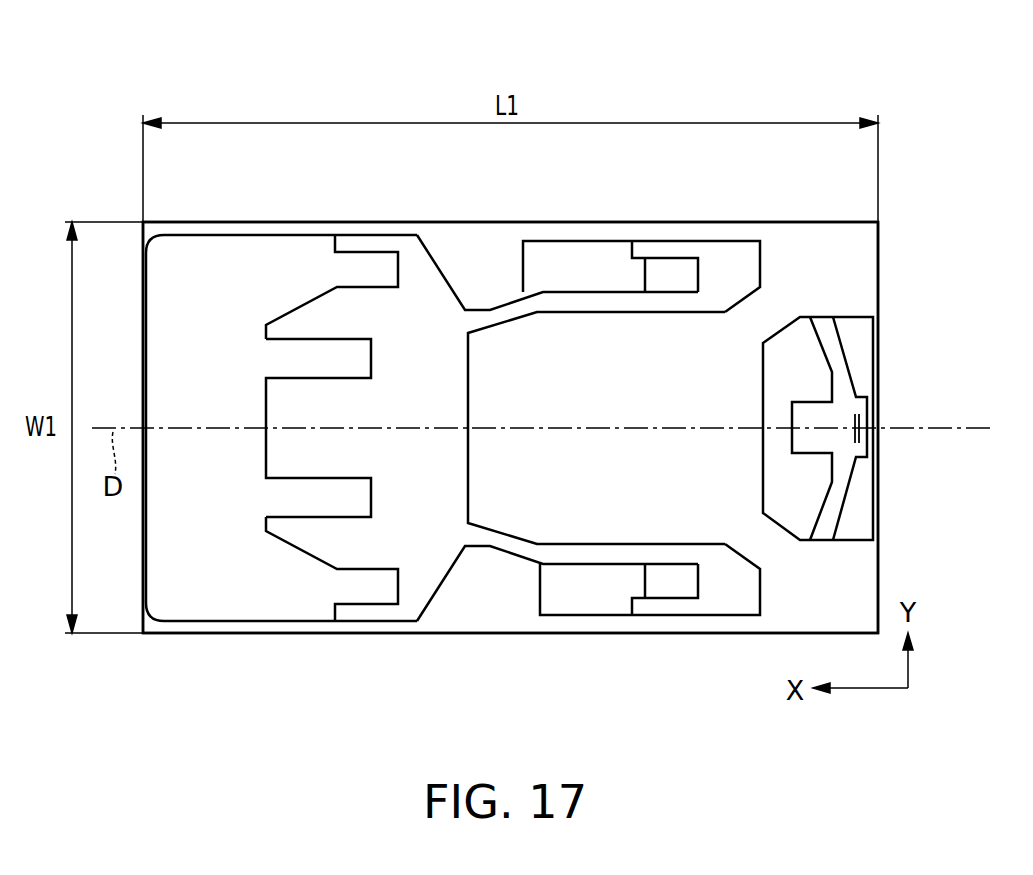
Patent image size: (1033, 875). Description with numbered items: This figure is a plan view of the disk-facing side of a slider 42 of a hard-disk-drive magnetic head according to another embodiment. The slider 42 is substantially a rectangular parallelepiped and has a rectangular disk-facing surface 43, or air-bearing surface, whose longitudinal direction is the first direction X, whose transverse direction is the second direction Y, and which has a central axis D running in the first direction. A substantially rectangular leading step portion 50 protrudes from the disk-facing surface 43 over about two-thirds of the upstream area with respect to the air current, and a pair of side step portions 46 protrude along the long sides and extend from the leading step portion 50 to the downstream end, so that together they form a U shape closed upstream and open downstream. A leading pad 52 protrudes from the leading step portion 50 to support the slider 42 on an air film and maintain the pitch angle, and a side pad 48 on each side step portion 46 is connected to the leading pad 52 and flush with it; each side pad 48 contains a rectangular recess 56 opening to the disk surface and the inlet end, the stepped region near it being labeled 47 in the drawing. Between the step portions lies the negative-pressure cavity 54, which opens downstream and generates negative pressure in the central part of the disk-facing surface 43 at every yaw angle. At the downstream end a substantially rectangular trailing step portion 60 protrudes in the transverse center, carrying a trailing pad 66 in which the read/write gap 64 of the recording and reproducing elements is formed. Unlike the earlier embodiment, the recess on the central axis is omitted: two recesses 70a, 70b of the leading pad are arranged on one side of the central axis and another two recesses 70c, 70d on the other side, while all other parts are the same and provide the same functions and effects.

The slider 42 is at (780, 195).
The disk-facing surface 43 is at (865, 563).
The side step portions 46 is at (580, 250).
The step portion 47 is at (667, 267).
The side pad 48 is at (735, 250).
The leading step portion 50 is at (240, 237).
The leading pad 52 is at (457, 467).
The negative-pressure cavity 54 is at (518, 347).
The recess 56 is at (862, 297).
The trailing step portion 60 is at (865, 338).
The read/write gap 64 is at (867, 410).
The trailing pad 66 is at (847, 473).
The recess 70a is at (272, 358).
The recess 70b is at (375, 250).
The recess 70c is at (370, 610).
The recess 70d is at (272, 493).